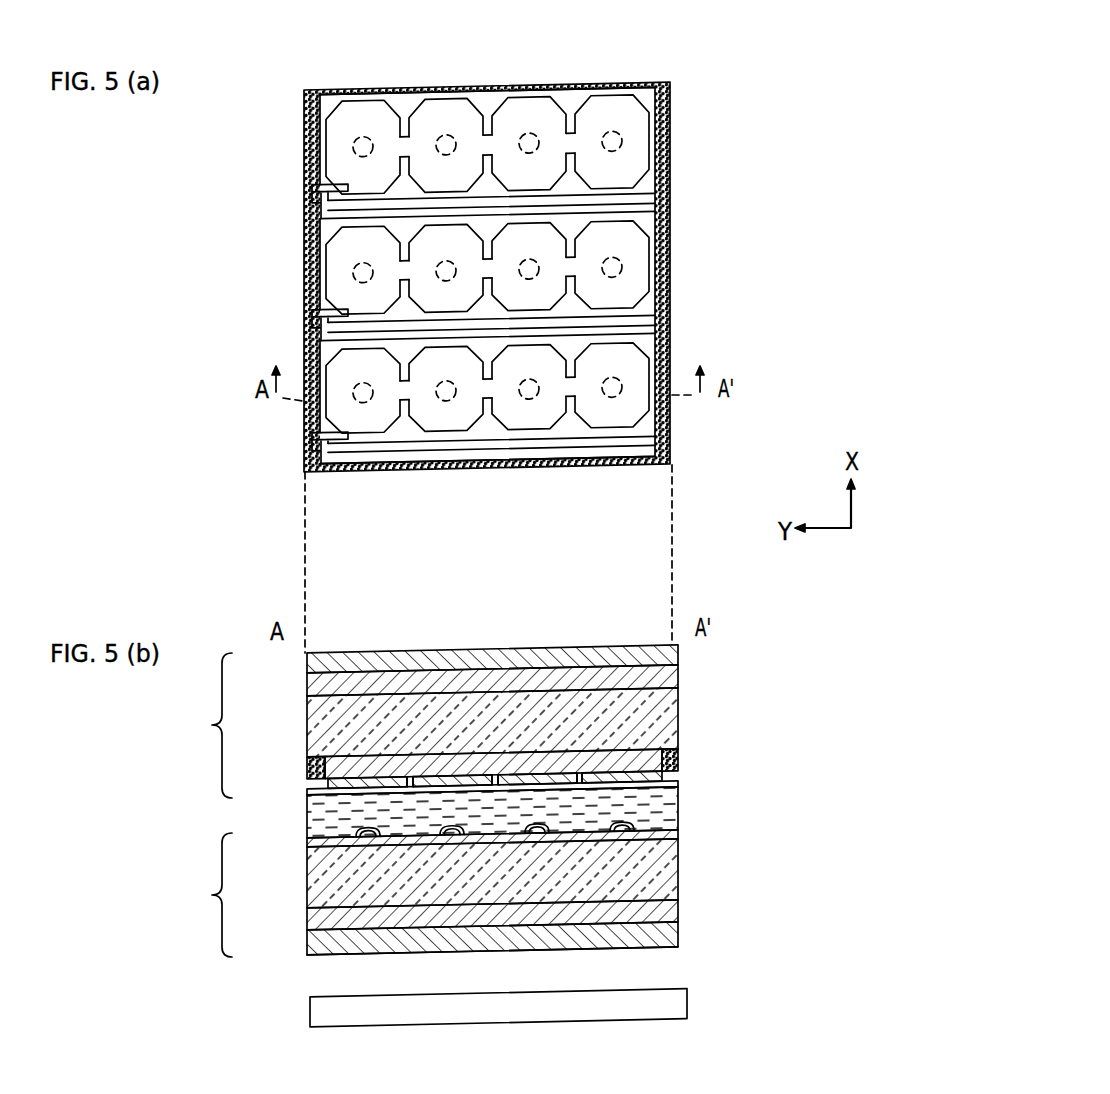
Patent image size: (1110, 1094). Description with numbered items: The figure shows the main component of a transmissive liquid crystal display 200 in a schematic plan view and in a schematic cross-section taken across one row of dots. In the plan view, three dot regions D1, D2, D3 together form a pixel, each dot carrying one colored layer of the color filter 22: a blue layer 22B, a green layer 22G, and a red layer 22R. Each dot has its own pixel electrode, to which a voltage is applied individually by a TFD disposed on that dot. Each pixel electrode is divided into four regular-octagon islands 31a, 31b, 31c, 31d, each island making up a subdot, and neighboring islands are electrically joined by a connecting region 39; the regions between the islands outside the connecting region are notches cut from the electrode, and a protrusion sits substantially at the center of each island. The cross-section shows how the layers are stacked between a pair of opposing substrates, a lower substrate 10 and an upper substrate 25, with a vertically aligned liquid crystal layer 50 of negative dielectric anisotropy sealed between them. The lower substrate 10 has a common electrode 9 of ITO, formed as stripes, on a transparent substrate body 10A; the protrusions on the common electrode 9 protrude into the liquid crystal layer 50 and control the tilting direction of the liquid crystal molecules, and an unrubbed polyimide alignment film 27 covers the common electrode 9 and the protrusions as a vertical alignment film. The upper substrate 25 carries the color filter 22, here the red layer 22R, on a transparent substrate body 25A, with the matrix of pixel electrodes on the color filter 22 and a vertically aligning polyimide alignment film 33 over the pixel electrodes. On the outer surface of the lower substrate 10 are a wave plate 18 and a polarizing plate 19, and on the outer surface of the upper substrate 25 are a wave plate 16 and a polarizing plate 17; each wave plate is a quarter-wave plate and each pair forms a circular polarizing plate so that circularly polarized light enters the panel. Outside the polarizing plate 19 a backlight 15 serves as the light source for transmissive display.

The liquid crystal display 200 is at (690, 79).
The island 31a is at (372, 434).
The island 31b is at (447, 433).
The island 31c is at (533, 432).
The island 31d is at (618, 430).
The connecting region 39 is at (487, 404).
The blue layer 22B is at (640, 99).
The green layer 22G is at (650, 216).
The red layer 22R is at (655, 337).
The color filter 22 is at (680, 730).
The element TFD is at (316, 185).
The dot D1 is at (340, 118).
The dot D2 is at (340, 270).
The dot D3 is at (340, 365).
The polarizing plate 17 is at (680, 650).
The wave plate 16 is at (680, 668).
The substrate body 25A is at (680, 703).
The upper substrate 25 is at (207, 725).
The alignment film 33 is at (680, 772).
The liquid crystal layer 50 is at (680, 802).
The alignment film 27 is at (680, 832).
The common electrode 9 is at (680, 858).
The lower substrate 10 is at (208, 895).
The substrate body 10A is at (680, 888).
The wave plate 18 is at (680, 912).
The polarizing plate 19 is at (680, 938).
The backlight 15 is at (687, 997).